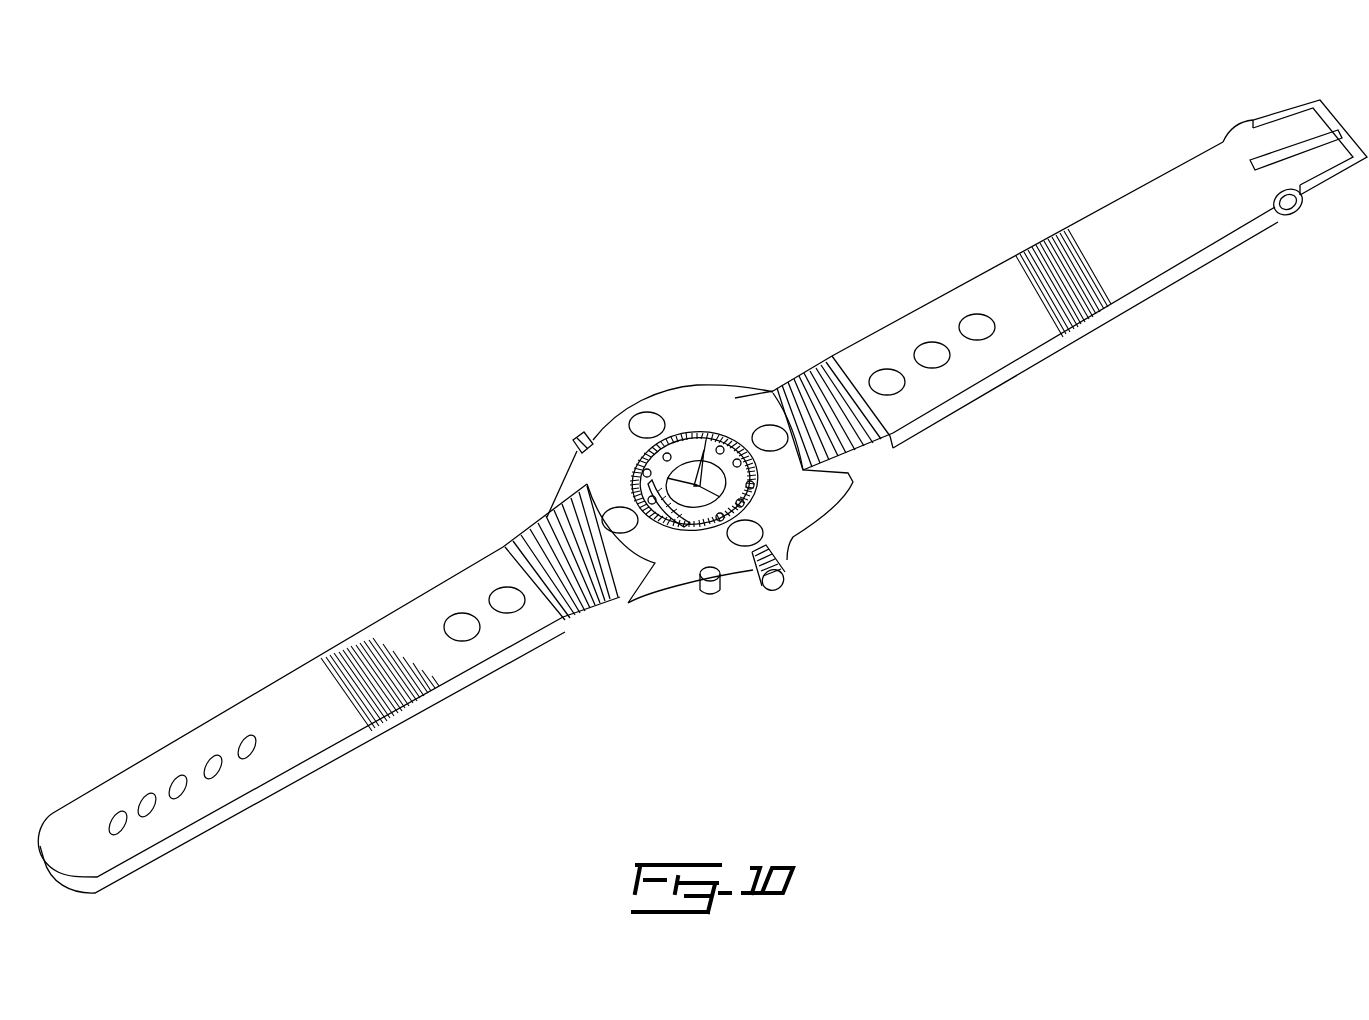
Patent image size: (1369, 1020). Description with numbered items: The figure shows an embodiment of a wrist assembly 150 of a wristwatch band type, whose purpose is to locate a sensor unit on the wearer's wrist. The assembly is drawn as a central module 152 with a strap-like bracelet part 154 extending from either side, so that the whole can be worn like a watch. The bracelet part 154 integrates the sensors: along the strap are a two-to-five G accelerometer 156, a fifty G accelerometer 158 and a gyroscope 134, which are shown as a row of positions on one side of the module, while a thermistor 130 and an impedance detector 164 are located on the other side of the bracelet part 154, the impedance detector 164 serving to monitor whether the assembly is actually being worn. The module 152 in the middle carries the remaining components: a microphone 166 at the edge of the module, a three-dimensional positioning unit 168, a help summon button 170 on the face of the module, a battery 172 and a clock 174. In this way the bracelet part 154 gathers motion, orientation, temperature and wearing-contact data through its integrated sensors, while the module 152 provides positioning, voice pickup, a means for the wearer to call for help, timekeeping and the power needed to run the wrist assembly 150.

The wrist assembly 150 is at (991, 197).
The bracelet part 154 is at (1163, 213).
The module 152 is at (687, 443).
The help summon button 170 is at (707, 403).
The 3D positioning unit 168 is at (762, 430).
The clock 174 is at (632, 430).
The microphone 166 is at (575, 444).
The battery 172 is at (800, 517).
The thermistor 130 is at (505, 598).
The impedance detector 164 is at (462, 625).
The 2-5 G accelerometer 156 is at (880, 370).
The 50 G accelerometer 158 is at (927, 347).
The gyroscope 134 is at (970, 323).